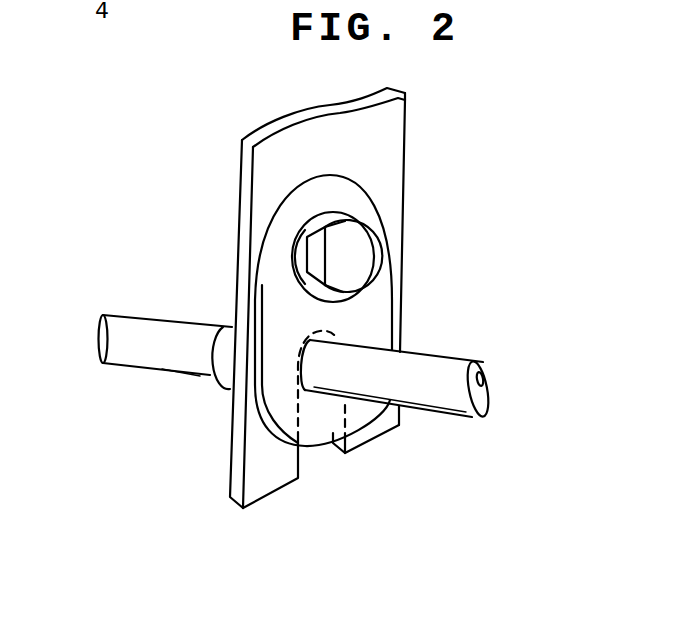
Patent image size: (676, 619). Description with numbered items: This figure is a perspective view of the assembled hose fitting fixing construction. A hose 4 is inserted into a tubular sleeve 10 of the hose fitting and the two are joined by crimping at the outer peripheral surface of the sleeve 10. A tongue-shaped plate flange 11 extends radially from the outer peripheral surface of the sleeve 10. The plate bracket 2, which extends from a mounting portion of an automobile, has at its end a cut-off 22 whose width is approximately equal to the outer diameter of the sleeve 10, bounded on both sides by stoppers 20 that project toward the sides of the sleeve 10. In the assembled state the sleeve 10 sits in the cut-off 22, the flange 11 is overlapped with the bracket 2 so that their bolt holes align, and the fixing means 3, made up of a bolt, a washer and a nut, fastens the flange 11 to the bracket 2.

The plate bracket 2 is at (293, 325).
The fixing means 3 is at (352, 247).
The hose 4 is at (130, 348).
The tubular sleeve 10 is at (223, 362).
The tongue-shaped plate flange 11 is at (370, 332).
The stopper 20 is at (260, 473).
The cut-off 22 is at (310, 460).